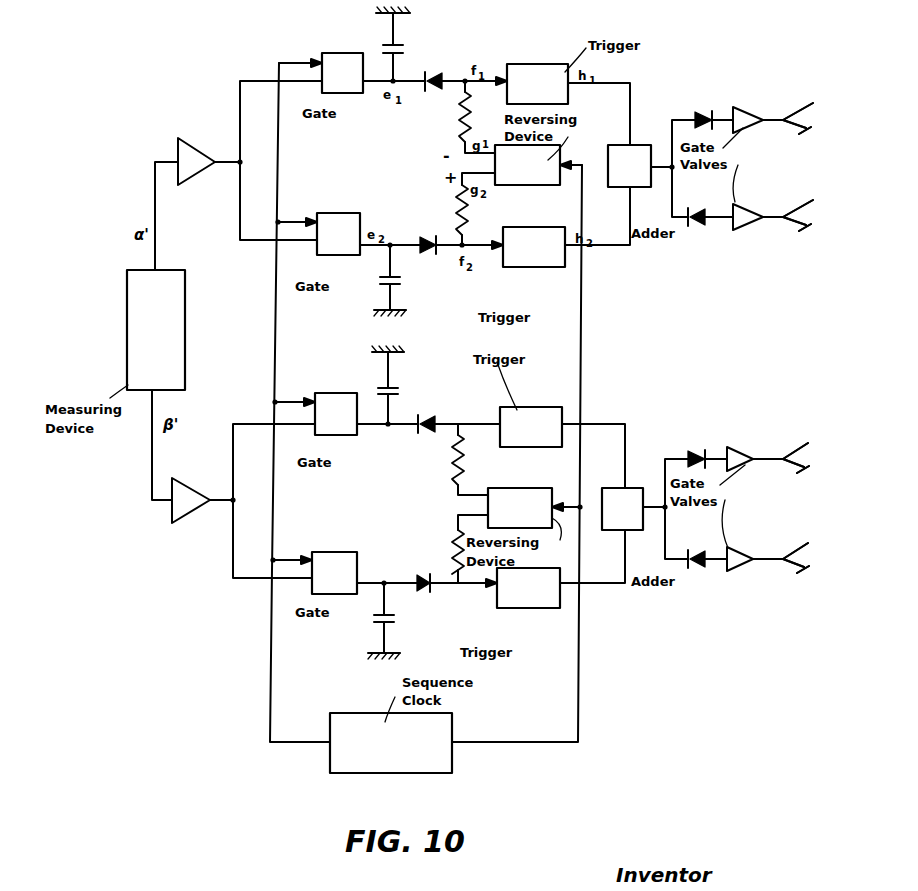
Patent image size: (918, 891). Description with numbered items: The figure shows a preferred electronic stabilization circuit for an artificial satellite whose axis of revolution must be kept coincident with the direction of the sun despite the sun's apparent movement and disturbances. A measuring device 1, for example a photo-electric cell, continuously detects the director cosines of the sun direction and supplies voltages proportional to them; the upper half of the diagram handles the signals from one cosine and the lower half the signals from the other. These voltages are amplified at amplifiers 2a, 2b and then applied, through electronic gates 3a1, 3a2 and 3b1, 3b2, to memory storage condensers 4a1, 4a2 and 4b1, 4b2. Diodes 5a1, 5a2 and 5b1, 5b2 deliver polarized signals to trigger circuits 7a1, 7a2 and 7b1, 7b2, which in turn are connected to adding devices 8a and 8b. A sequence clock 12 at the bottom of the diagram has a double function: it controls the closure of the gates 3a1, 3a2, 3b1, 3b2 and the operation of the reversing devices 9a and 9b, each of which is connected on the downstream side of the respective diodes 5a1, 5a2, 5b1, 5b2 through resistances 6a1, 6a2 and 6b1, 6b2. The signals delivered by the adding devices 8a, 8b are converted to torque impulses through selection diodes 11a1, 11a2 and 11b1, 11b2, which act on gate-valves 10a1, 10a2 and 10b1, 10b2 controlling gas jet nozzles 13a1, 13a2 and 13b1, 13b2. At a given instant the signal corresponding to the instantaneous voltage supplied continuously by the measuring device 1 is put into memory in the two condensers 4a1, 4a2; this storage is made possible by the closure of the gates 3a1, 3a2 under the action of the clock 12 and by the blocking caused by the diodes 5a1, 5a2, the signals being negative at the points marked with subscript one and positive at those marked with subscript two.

The measuring device 1 is at (185, 352).
The amplifier 2a is at (194, 163).
The amplifier 2b is at (182, 493).
The electronic gate 3a1 is at (345, 113).
The electronic gate 3a2 is at (340, 283).
The electronic gate 3b1 is at (343, 460).
The electronic gate 3b2 is at (340, 608).
The memory storage condenser 4a1 is at (405, 53).
The memory storage condenser 4a2 is at (403, 280).
The memory storage condenser 4b1 is at (400, 392).
The memory storage condenser 4b2 is at (397, 618).
The diode 5a1 is at (445, 78).
The diode 5a2 is at (432, 222).
The diode 5b1 is at (430, 420).
The diode 5b2 is at (418, 577).
The resistance 6a1 is at (461, 122).
The resistance 6a2 is at (456, 208).
The resistance 6b1 is at (454, 460).
The resistance 6b2 is at (454, 548).
The trigger circuit 7a1 is at (548, 76).
The trigger circuit 7a2 is at (552, 290).
The trigger circuit 7b1 is at (530, 416).
The trigger circuit 7b2 is at (545, 625).
The adding device 8a is at (638, 153).
The adding device 8b is at (633, 496).
The reversing device 9a is at (539, 181).
The reversing device 9b is at (530, 496).
The gate-valve 10a1 is at (757, 116).
The gate-valve 10a2 is at (756, 214).
The gate-valve 10b1 is at (740, 452).
The gate-valve 10b2 is at (744, 558).
The selection diode 11a1 is at (705, 112).
The selection diode 11a2 is at (712, 202).
The selection diode 11b1 is at (696, 451).
The selection diode 11b2 is at (702, 552).
The sequence clock 12 is at (412, 774).
The gas jet nozzle 13a1 is at (802, 131).
The gas jet nozzle 13a2 is at (802, 230).
The gas jet nozzle 13b1 is at (798, 470).
The gas jet nozzle 13b2 is at (800, 570).